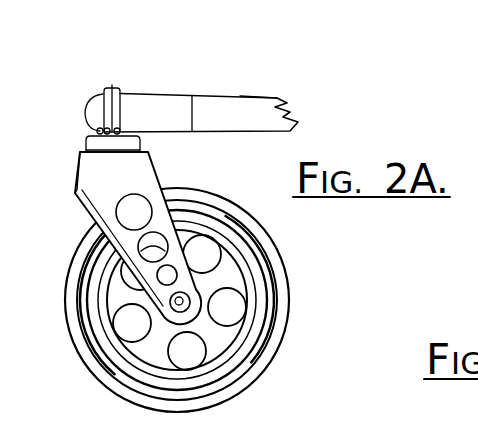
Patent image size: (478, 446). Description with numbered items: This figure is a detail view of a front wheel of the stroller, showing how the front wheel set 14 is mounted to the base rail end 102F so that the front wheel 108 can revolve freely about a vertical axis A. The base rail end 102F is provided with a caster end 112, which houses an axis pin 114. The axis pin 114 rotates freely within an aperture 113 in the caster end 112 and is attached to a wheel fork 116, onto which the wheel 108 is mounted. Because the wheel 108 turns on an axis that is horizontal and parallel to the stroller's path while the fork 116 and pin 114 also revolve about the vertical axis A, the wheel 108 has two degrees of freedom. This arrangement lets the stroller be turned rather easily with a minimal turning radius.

The front wheel set 14 is at (242, 176).
The base rail end 102F is at (230, 108).
The front wheel 108 is at (290, 292).
The caster end 112 is at (180, 127).
The aperture 113 is at (113, 112).
The axis pin 114 is at (104, 90).
The wheel fork 116 is at (112, 187).
The vertical axis A is at (112, 88).